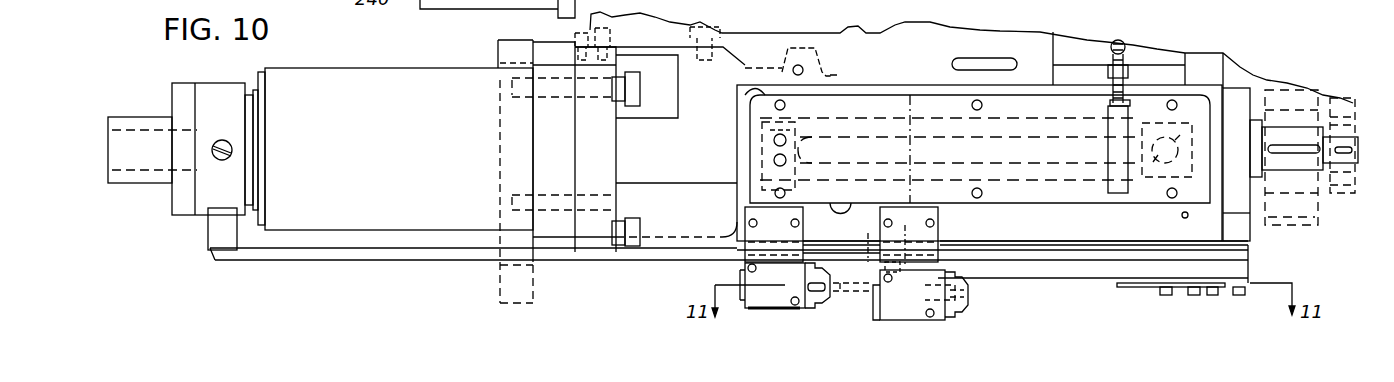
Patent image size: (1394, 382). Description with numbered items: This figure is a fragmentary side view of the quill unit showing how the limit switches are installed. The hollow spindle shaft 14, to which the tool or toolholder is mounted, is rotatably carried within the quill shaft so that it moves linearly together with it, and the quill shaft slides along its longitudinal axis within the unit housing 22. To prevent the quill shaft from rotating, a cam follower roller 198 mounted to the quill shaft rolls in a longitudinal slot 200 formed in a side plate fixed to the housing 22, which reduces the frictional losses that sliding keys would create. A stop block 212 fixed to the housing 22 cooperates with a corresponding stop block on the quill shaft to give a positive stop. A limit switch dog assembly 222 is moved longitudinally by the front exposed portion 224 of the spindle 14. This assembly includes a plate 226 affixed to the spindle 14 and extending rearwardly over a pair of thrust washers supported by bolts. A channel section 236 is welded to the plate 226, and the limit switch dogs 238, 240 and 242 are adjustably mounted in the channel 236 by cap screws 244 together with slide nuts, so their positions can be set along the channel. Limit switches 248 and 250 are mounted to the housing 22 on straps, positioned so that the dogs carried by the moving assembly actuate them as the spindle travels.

The spindle shaft 14 is at (168, 208).
The unit housing 22 is at (835, 33).
The cam follower roller 198 is at (1156, 206).
The longitudinal slot 200 is at (1037, 150).
The stop block 212 is at (760, 154).
The limit switch dog assembly 222 is at (310, 264).
The front exposed portion 224 is at (200, 218).
The plate 226 is at (450, 262).
The channel section 236 is at (1250, 264).
The limit switch dog 238 is at (970, 292).
The limit switch dog 240 is at (1130, 290).
The limit switch dog 242 is at (1226, 290).
The cap screw 244 is at (1205, 298).
The limit switch 248 is at (770, 310).
The limit switch 250 is at (880, 323).